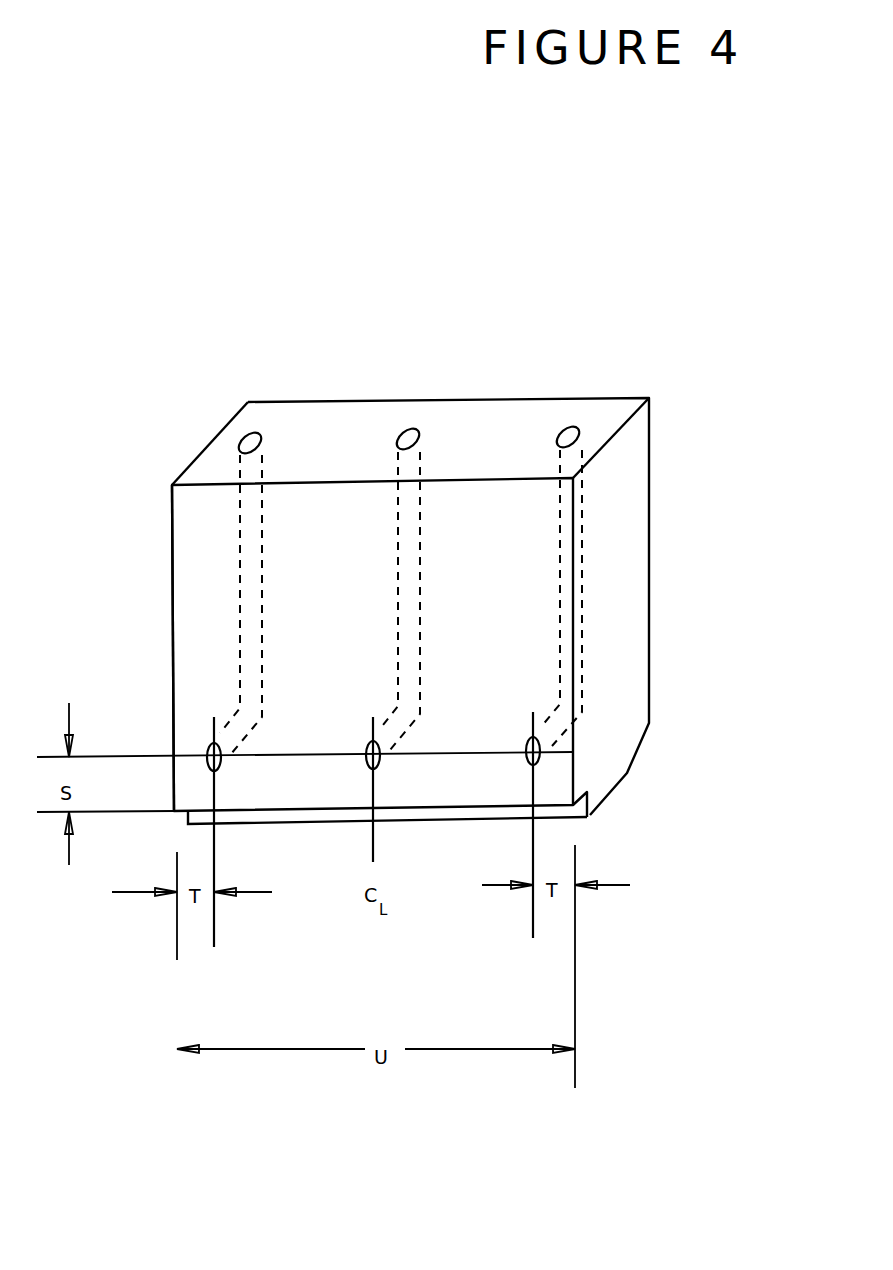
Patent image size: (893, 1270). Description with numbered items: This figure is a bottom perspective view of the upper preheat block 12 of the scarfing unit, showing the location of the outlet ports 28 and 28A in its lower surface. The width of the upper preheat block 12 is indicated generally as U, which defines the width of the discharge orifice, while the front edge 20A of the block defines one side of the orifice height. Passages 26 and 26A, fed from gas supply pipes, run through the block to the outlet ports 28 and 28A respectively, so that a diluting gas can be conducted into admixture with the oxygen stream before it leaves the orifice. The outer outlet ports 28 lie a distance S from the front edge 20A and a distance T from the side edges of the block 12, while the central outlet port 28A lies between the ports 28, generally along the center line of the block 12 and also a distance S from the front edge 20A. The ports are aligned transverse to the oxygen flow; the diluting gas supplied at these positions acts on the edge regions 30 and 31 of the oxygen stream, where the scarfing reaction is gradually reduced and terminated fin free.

The upper preheat block 12 is at (226, 484).
The front edge of upper preheat block 20A is at (307, 812).
The passage 26 is at (557, 463).
The passage 26A is at (397, 467).
The outlet ports 28 is at (530, 740).
The outlet port 28A is at (378, 768).
The area of reduced scarfing reaction 30 is at (537, 573).
The area of reduced scarfing reaction 31 is at (183, 525).